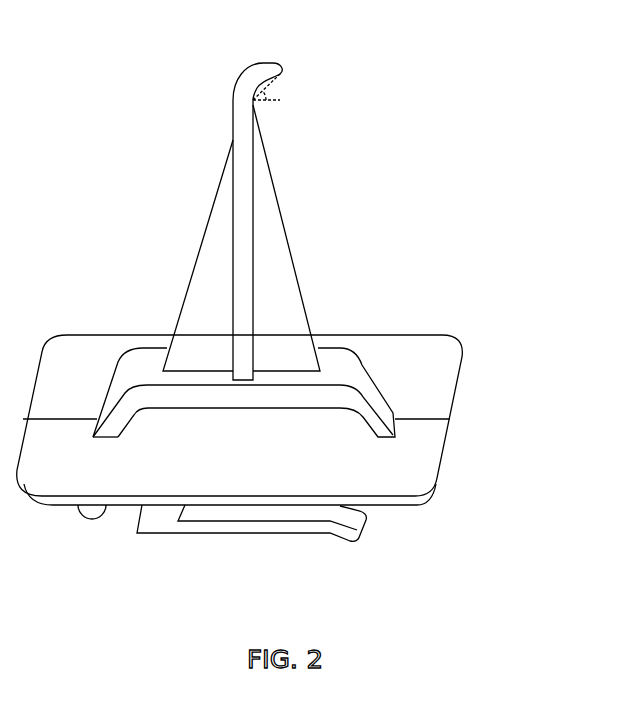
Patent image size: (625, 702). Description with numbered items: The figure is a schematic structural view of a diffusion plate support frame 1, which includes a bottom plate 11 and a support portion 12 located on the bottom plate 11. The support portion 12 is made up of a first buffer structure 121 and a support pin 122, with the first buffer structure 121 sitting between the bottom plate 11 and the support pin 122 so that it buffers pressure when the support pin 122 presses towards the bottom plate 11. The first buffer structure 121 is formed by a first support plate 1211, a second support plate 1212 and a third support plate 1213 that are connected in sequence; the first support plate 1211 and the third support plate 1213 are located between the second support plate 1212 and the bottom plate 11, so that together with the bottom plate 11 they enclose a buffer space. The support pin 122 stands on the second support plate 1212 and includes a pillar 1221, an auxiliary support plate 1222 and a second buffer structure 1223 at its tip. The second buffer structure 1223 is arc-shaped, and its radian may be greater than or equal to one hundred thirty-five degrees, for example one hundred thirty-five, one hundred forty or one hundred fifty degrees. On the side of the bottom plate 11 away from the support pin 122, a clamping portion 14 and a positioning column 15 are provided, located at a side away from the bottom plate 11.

The diffusion plate support frame 1 is at (261, 46).
The bottom plate 11 is at (445, 400).
The support portion 12 is at (440, 160).
The first buffer structure 121 is at (360, 370).
The first support plate 1211 is at (113, 397).
The second support plate 1212 is at (162, 360).
The third support plate 1213 is at (381, 398).
The support pin 122 is at (388, 70).
The pillar 1221 is at (247, 185).
The auxiliary support plate 1222 is at (283, 252).
The second buffer structure 1223 is at (283, 68).
The clamping portion 14 is at (213, 535).
The positioning column 15 is at (98, 522).